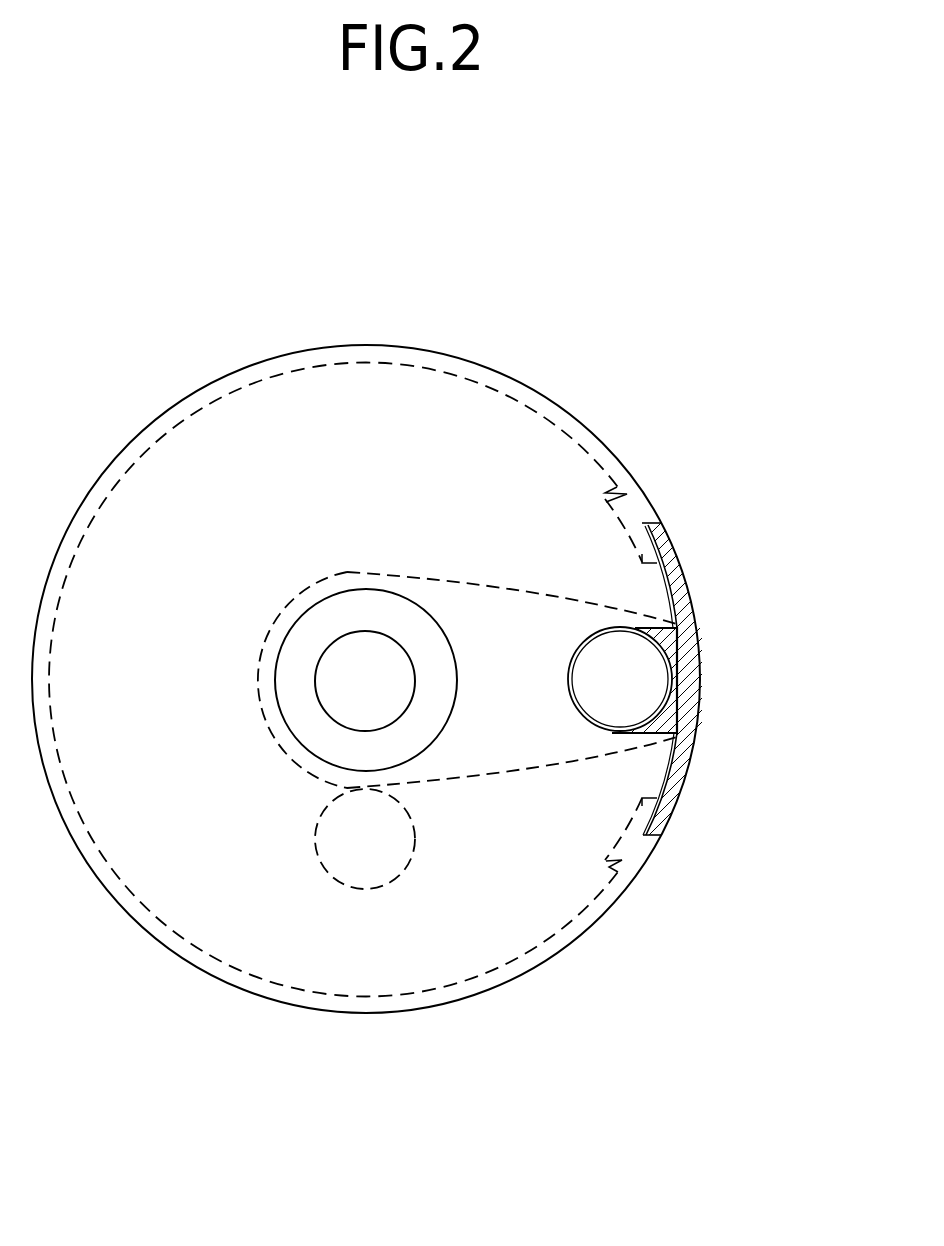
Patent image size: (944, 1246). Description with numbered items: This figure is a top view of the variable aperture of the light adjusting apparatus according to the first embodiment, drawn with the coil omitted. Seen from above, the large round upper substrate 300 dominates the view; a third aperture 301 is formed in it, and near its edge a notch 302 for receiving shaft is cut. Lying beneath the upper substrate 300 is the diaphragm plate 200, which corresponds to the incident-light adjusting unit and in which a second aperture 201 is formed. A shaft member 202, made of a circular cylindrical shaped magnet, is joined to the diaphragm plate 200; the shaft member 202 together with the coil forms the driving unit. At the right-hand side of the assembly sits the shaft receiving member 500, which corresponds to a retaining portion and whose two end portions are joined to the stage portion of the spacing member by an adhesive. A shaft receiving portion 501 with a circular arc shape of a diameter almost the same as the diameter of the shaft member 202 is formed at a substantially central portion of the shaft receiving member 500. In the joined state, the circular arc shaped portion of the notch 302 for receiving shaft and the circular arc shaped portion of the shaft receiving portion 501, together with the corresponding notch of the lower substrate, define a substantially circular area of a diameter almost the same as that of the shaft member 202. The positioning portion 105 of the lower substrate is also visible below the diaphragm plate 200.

The positioning portion 105 is at (362, 863).
The diaphragm plate 200 is at (503, 615).
The second aperture 201 is at (403, 627).
The shaft member 202 is at (623, 655).
The upper substrate 300 is at (223, 440).
The third aperture 301 is at (370, 587).
The notch for receiving shaft 302 is at (575, 703).
The shaft receiving member 500 is at (688, 762).
The shaft receiving portion 501 is at (675, 672).